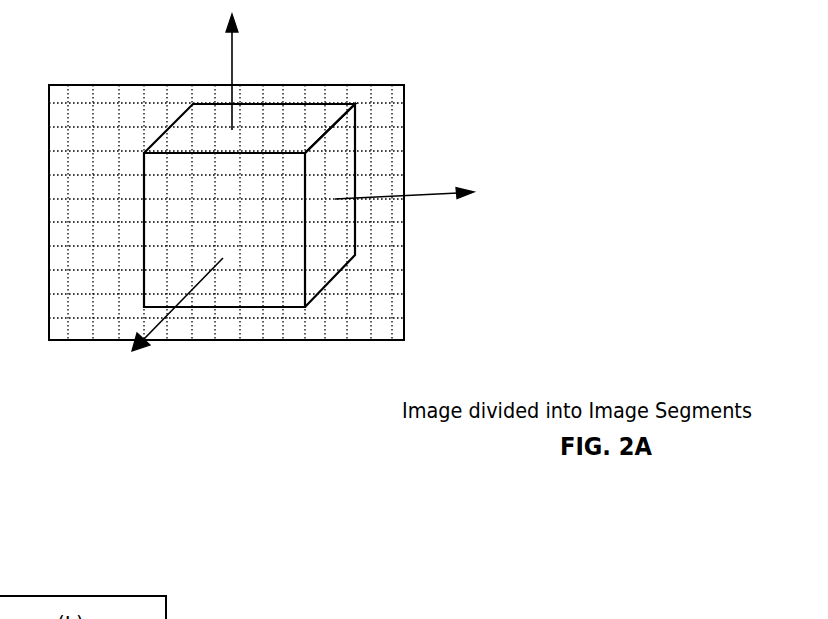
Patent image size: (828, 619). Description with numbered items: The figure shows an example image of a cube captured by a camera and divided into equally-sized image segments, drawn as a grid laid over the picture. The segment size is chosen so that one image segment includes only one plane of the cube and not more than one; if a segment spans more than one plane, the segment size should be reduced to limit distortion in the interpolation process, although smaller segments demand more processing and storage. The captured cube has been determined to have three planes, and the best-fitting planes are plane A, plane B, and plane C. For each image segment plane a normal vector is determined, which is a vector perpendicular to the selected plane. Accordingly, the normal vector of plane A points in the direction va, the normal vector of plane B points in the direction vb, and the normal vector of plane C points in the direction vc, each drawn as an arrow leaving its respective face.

The plane A is at (224, 230).
The plane B is at (330, 205).
The plane C is at (249, 128).
The normal vector direction of plane A va is at (164, 333).
The normal vector direction of plane B vb is at (427, 203).
The normal vector direction of plane C vc is at (251, 72).